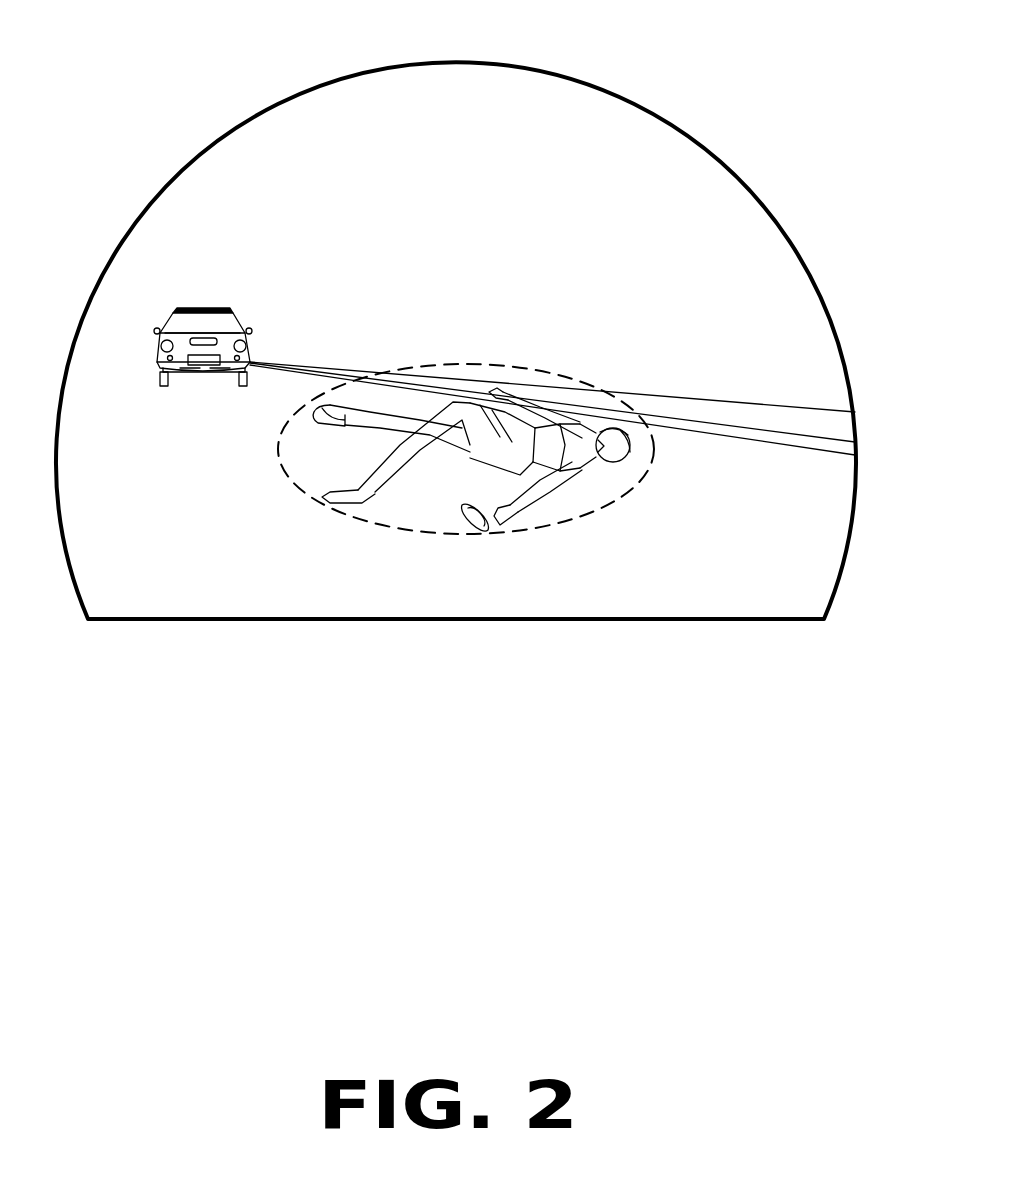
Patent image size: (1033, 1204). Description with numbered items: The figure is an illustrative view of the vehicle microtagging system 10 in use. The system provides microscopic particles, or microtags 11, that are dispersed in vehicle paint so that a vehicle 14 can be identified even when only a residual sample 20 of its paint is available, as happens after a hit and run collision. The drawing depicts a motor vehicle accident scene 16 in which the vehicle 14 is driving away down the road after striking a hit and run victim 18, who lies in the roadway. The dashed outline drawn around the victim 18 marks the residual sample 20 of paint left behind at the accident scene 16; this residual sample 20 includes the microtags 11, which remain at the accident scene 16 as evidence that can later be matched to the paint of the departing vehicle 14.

The vehicle microtagging system 10 is at (456, 315).
The microtags 11 is at (648, 468).
The vehicle 14 is at (237, 318).
The motor vehicle accident scene 16 is at (192, 157).
The hit and run victim 18 is at (332, 503).
The residual sample of paint 20 is at (583, 383).